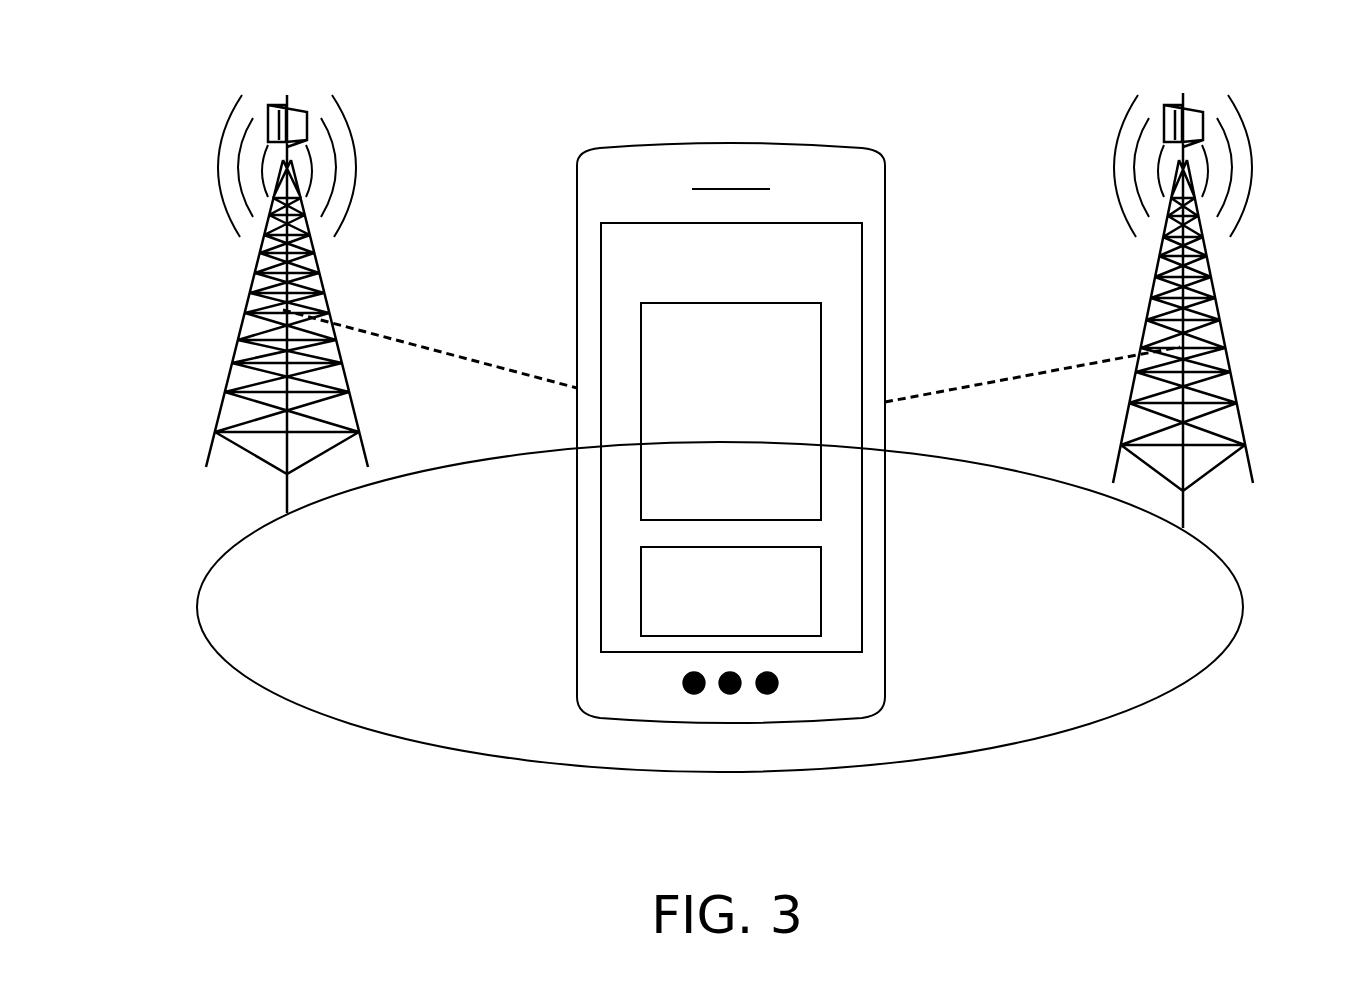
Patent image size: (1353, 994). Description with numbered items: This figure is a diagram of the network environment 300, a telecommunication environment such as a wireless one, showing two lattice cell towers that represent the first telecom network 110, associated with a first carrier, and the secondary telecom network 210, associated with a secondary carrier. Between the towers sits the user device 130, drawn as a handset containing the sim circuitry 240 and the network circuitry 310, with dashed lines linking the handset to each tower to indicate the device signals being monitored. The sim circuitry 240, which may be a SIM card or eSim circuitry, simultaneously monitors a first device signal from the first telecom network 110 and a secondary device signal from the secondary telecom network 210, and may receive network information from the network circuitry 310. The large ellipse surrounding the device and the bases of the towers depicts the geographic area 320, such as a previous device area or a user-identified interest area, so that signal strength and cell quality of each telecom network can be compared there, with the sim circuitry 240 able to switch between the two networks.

The network environment 300 is at (995, 92).
The first telecom network 110 is at (250, 335).
The secondary telecom network 210 is at (1205, 300).
The user device 130 is at (731, 433).
The sim circuitry 240 is at (731, 411).
The network circuitry 310 is at (731, 591).
The geographic area 320 is at (1243, 607).